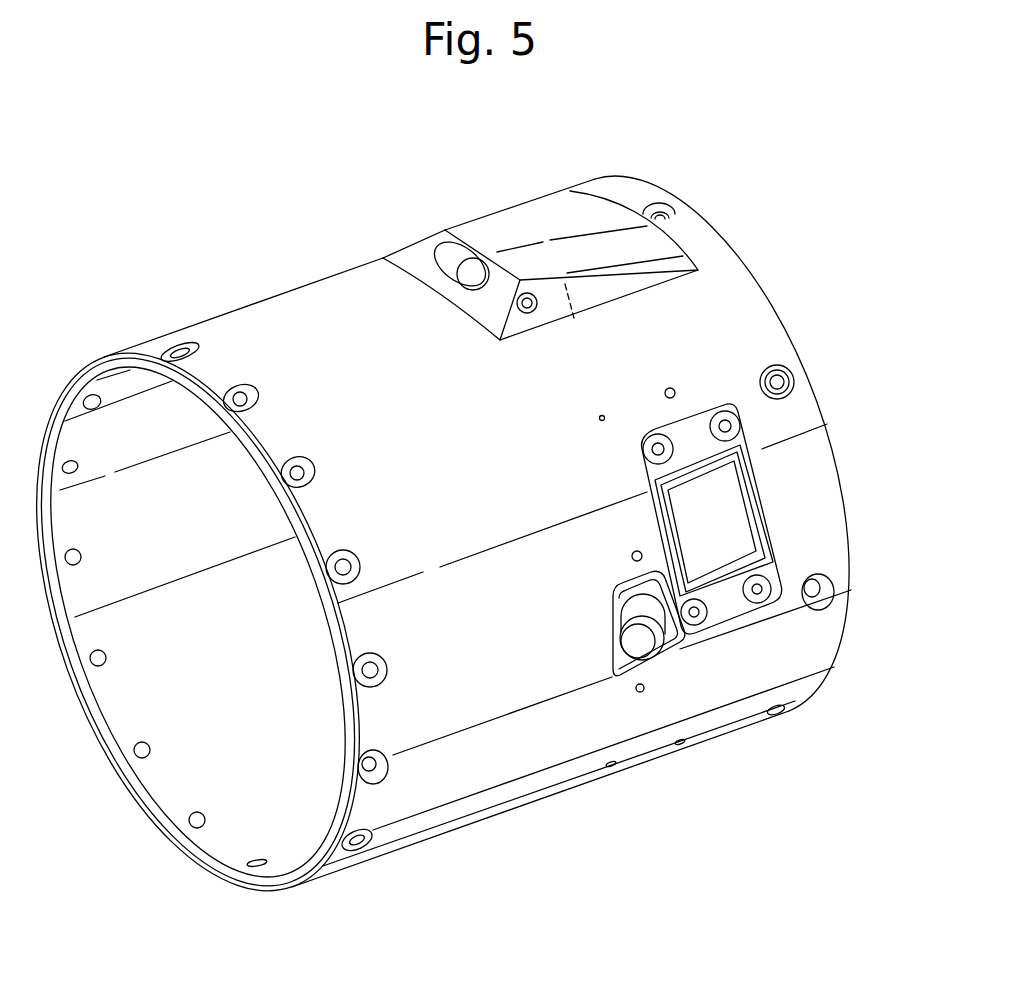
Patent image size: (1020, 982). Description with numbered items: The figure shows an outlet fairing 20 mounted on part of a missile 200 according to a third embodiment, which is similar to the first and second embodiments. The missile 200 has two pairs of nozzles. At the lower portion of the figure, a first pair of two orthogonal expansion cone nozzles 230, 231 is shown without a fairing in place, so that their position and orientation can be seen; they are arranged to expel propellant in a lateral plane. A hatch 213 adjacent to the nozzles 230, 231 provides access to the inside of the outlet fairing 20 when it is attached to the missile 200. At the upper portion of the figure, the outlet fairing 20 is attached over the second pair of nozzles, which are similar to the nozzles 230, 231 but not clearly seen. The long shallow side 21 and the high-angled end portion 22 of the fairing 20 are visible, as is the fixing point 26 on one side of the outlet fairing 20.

The missile 200 is at (557, 830).
The outlet fairing 20 is at (579, 229).
The long shallow side 21 is at (535, 223).
The high-angled end portion 22 is at (418, 257).
The fixing point 26 is at (537, 297).
The hatch 213 is at (718, 512).
The expansion cone nozzle 230 is at (648, 595).
The expansion cone nozzle 231 is at (635, 647).